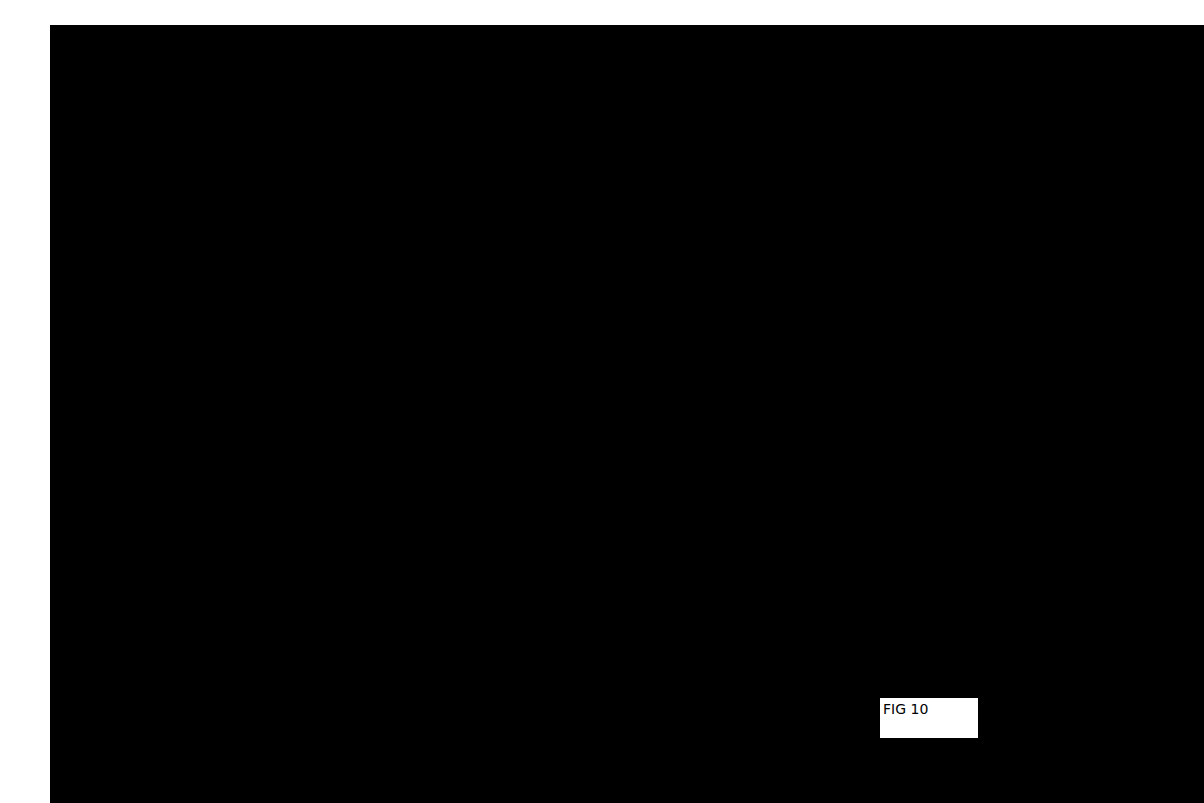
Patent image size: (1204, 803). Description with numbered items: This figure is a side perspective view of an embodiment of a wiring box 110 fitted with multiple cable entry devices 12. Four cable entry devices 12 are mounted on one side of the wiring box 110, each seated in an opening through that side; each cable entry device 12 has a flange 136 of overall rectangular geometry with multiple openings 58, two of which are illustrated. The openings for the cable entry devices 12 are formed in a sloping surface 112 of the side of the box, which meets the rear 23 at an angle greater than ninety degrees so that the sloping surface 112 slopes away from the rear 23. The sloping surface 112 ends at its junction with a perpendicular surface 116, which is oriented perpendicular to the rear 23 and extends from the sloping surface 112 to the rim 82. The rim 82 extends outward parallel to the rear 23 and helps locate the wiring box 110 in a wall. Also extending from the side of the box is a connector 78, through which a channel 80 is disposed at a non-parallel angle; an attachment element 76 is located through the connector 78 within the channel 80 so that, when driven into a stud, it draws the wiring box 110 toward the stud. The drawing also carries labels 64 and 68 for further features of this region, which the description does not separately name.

The cable entry device 12 is at (700, 245).
The rear wall 23 is at (866, 118).
The wiring box 110 is at (222, 190).
The flange 136 is at (380, 238).
The sloping surface 112 is at (805, 310).
The channel 80 is at (501, 437).
The openings 58 is at (660, 380).
The rim 82 is at (948, 425).
The perpendicular surface 116 is at (800, 450).
The connector 78 is at (330, 430).
The handle lever 64 is at (540, 488).
The latch housing 68 is at (425, 480).
The attachment element 76 is at (575, 592).